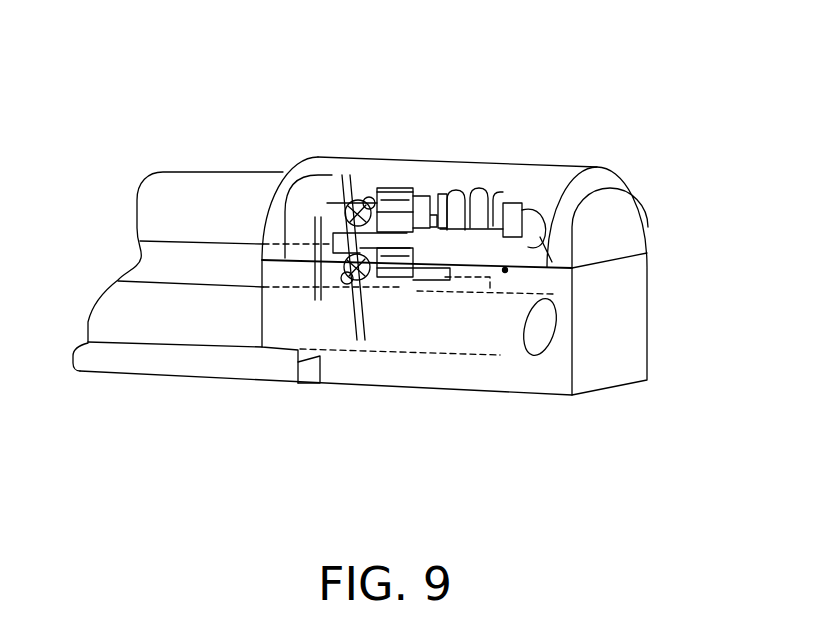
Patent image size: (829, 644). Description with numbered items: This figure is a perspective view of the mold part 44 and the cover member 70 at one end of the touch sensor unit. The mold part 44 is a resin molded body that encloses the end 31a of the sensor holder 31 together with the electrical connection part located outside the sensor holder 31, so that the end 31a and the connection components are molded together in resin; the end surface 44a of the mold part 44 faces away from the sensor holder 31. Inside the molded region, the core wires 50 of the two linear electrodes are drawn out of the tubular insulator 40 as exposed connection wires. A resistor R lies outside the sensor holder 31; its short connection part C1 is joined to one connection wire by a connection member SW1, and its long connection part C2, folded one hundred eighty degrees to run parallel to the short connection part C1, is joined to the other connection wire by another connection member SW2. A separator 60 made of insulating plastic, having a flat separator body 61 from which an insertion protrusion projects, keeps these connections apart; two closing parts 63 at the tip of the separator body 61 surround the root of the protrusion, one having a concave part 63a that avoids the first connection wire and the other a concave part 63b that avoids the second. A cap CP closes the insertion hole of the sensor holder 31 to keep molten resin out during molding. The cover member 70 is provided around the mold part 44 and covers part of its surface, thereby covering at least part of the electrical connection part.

The sensor holder 31 is at (120, 187).
The end of the sensor holder 31a is at (283, 177).
The tubular insulator 40 is at (340, 196).
The mold part 44 is at (632, 327).
The end surface of the mold part 44a is at (263, 215).
The core wire 50 is at (400, 188).
The separator 60 is at (505, 270).
The separator body 61 is at (540, 237).
The closing part 63 is at (345, 206).
The concave part 63a is at (369, 197).
The concave part 63b is at (320, 268).
The cover member 70 is at (548, 202).
The connection member SW1 is at (432, 200).
The connection member SW2 is at (410, 284).
The short connection part C1 is at (470, 200).
The long connection part C2 is at (487, 278).
The resistor R is at (495, 192).
The cap CP is at (480, 356).